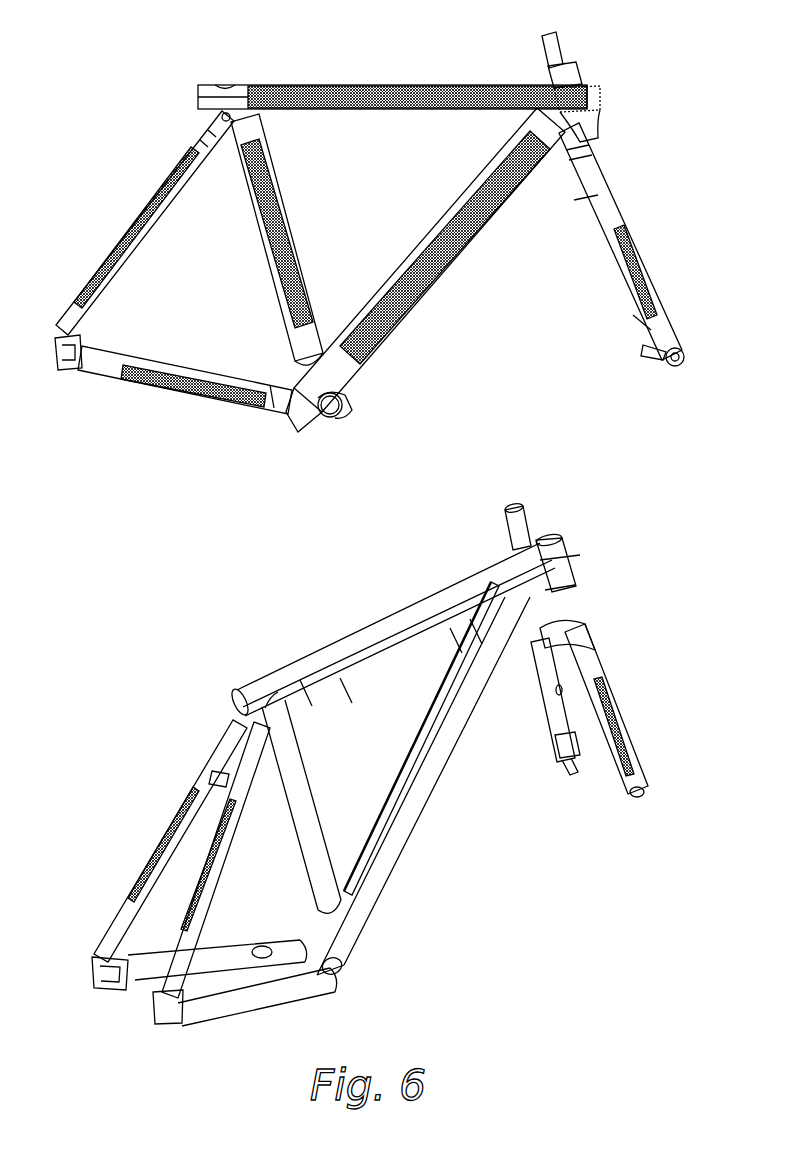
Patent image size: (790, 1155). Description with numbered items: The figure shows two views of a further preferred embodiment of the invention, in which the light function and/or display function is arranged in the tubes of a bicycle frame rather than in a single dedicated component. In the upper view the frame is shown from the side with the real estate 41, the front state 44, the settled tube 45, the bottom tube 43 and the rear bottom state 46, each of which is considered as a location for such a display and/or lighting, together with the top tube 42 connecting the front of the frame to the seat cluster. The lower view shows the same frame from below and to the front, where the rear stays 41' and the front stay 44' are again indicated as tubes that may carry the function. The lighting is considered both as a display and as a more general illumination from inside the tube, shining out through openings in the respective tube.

The real estate 41 is at (132, 223).
The top tube 42 is at (330, 84).
The bottom tube 43 is at (417, 287).
The front state 44 is at (624, 199).
The settled tube 45 is at (278, 220).
The rear bottom state 46 is at (205, 387).
The seat stay 41' is at (180, 859).
The fork 44' is at (620, 708).